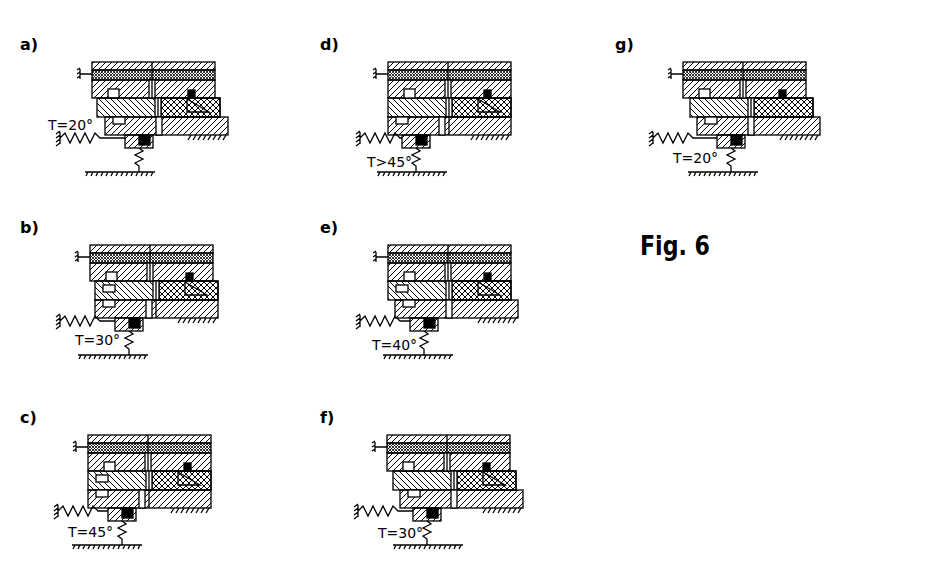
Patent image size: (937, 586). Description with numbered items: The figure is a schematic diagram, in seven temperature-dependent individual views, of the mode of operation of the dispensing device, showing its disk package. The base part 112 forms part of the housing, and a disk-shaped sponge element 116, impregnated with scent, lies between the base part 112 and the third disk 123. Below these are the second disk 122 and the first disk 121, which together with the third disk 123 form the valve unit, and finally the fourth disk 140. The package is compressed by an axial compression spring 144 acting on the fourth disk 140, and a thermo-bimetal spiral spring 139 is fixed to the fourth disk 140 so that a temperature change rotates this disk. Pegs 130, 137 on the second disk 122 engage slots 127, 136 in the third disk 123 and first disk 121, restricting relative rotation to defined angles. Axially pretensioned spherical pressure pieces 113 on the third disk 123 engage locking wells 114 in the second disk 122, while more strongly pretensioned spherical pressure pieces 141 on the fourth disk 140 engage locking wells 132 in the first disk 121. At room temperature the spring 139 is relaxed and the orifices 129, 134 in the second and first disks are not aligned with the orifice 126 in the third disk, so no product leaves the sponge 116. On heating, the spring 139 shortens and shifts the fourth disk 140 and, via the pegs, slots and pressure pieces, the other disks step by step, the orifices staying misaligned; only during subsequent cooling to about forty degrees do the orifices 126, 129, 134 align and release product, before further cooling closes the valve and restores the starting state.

The base part 112 is at (214, 62).
The spherical pressure piece 113 is at (197, 94).
The locking well 114 is at (210, 108).
The sponge element 116 is at (215, 74).
The first disk 121 is at (228, 128).
The second disk 122 is at (97, 108).
The third disk 123 is at (92, 88).
The orifice 126 is at (152, 80).
The slot 127 is at (402, 102).
The orifice 129 is at (158, 110).
The peg 130 is at (104, 466).
The locking well 132 is at (705, 122).
The orifice 134 is at (160, 136).
The slot 136 is at (103, 306).
The peg 137 is at (103, 290).
The thermo-bimetal spiral spring 139 is at (78, 140).
The fourth disk 140 is at (152, 148).
The spherical pressure piece 141 is at (140, 326).
The axial compression spring 144 is at (141, 158).